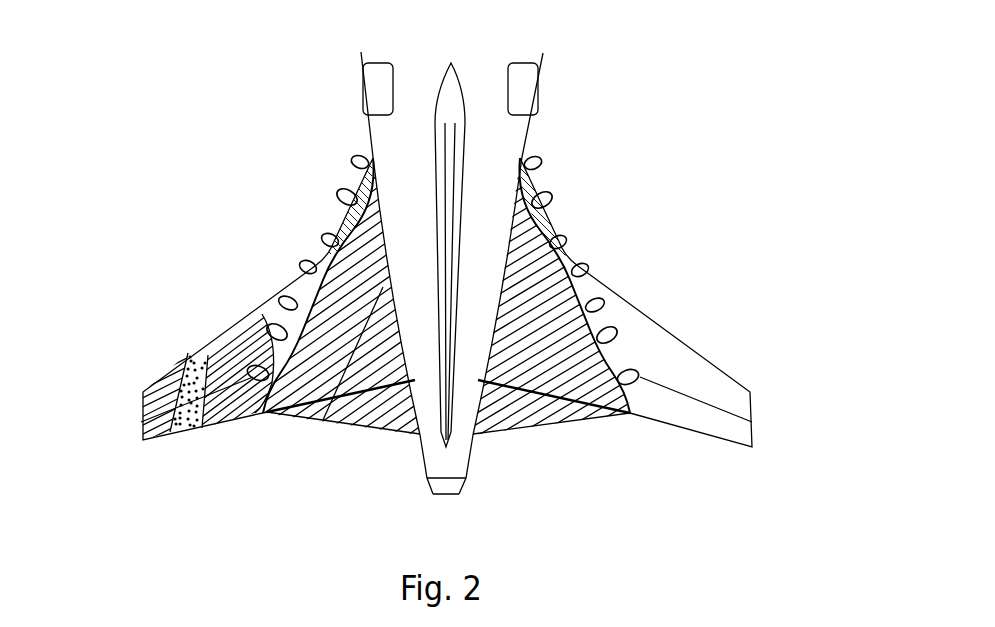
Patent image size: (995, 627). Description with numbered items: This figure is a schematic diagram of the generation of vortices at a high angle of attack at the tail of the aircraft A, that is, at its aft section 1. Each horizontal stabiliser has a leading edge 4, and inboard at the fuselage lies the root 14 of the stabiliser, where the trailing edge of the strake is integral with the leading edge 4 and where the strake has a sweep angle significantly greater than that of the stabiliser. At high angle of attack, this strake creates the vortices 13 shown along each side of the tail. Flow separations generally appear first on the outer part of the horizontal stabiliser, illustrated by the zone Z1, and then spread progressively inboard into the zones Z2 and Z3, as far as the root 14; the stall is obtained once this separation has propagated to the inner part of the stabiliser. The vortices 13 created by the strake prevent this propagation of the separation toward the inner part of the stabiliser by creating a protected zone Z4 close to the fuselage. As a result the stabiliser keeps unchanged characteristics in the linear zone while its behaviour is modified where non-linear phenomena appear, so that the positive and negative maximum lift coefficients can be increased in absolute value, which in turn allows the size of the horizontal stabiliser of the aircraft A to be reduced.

The aft section 1 is at (124, 81).
The aircraft A is at (362, 98).
The leading edge 4 is at (180, 320).
The vortices 13 is at (326, 190).
The root 14 is at (323, 420).
The zone Z1 is at (226, 398).
The zone Z2 is at (185, 434).
The zone Z3 is at (278, 298).
The protected zone Z4 is at (359, 440).